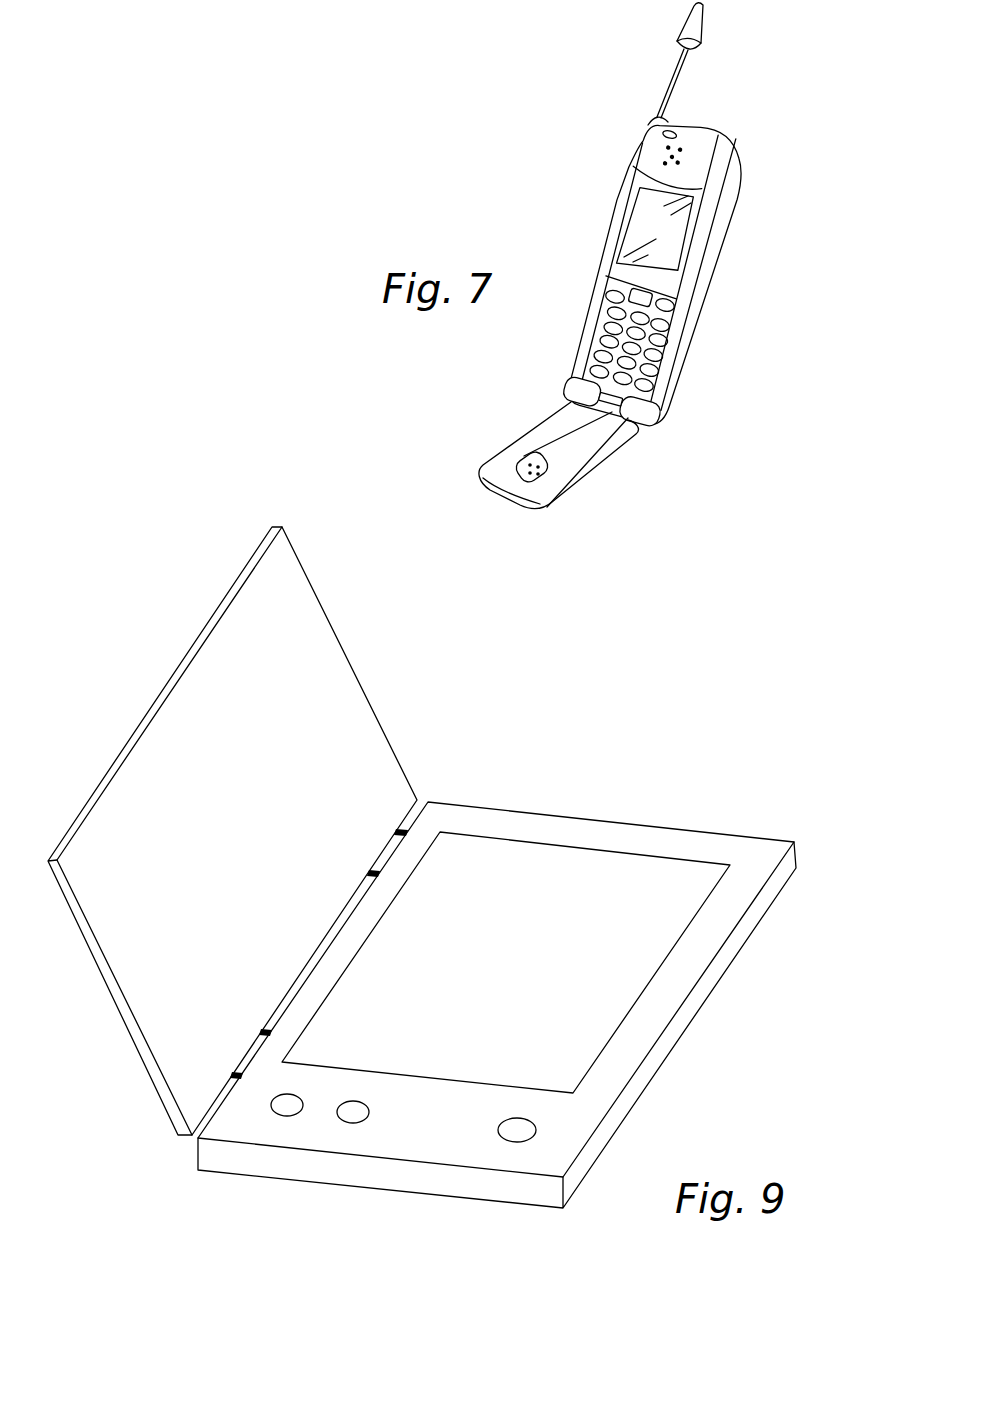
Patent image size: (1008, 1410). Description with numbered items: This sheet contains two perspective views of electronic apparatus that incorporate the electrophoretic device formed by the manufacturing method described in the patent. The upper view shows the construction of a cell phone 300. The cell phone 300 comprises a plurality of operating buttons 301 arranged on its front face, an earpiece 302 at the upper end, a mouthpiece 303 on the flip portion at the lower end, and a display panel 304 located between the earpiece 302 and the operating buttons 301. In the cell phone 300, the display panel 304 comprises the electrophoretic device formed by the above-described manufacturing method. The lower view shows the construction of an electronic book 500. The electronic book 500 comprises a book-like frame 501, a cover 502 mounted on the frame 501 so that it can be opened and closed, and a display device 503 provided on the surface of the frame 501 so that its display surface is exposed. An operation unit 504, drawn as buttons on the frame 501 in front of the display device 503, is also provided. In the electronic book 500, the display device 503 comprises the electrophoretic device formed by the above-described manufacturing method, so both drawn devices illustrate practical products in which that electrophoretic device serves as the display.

In FIG. 7, the cell phone 300 is at (778, 108).
In FIG. 7, the operating buttons 301 is at (656, 374).
In FIG. 7, the earpiece 302 is at (662, 156).
In FIG. 7, the mouthpiece 303 is at (542, 463).
In FIG. 7, the display panel 304 is at (640, 223).
In FIG. 9, the electronic book 500 is at (598, 748).
In FIG. 9, the book-like frame 501 is at (497, 816).
In FIG. 9, the cover 502 is at (344, 681).
In FIG. 9, the display device 503 is at (604, 860).
In FIG. 9, the operation unit 504 is at (510, 1137).